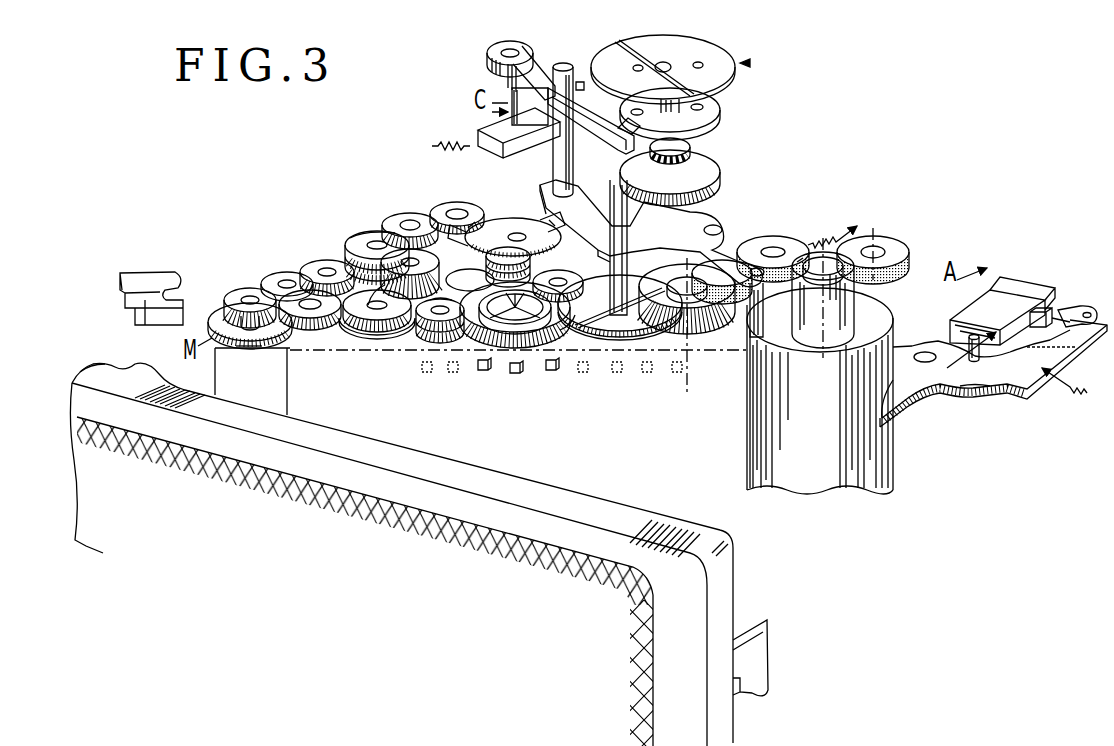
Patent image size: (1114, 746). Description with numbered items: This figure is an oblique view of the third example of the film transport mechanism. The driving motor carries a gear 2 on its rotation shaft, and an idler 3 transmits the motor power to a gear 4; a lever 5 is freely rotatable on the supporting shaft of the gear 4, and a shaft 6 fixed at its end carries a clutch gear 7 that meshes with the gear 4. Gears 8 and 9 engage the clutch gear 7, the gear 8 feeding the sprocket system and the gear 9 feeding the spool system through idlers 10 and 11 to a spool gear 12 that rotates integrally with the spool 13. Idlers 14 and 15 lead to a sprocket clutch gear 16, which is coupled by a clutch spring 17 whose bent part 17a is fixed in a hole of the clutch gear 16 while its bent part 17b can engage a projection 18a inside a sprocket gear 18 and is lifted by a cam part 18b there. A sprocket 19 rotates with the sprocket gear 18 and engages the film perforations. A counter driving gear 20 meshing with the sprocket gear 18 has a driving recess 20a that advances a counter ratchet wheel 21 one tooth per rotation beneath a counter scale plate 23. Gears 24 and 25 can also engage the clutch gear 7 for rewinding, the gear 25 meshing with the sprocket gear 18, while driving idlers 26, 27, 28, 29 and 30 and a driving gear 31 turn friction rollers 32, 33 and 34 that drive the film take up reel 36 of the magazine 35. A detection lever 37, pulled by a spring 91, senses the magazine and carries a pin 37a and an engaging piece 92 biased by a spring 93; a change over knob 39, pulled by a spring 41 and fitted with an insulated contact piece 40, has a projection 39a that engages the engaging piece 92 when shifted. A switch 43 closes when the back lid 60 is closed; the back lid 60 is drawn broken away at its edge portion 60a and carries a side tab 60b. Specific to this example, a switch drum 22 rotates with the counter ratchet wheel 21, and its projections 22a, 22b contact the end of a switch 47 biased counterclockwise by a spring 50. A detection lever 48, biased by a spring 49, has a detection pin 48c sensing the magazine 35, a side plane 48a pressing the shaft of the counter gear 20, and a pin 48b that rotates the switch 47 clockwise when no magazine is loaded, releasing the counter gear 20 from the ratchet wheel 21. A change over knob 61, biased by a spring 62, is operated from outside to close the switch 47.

The gear 2 is at (243, 293).
The idler 3 is at (310, 330).
The gear 4 is at (350, 335).
The lever 5 is at (375, 322).
The shaft 6 is at (395, 330).
The clutch gear 7 is at (425, 270).
The gear 8 is at (372, 232).
The gear 9 is at (362, 240).
The idler 10 is at (318, 262).
The idler 11 is at (268, 273).
The spool gear 12 is at (258, 342).
The spool 13 is at (287, 385).
The idler 14 is at (408, 213).
The idler 15 is at (455, 203).
The sprocket clutch gear 16 is at (500, 230).
The clutch spring 17 is at (516, 228).
The bent part 17a is at (540, 222).
The bent part 17b is at (480, 225).
The sprocket gear 18 is at (478, 345).
The projection 18a is at (508, 372).
The cam part 18b is at (548, 372).
The sprocket 19 is at (568, 350).
The counter driving gear 20 is at (605, 330).
The driving recess 20a is at (612, 146).
The counter ratchet wheel 21 is at (718, 170).
The switch drum 22 is at (712, 110).
The projection 22a is at (622, 124).
The projection 22b is at (700, 137).
The counter scale plate 23 is at (735, 50).
The gear 24 is at (430, 335).
The gear 25 is at (443, 335).
The driving idler 26 is at (468, 279).
The driving idler 27 is at (560, 278).
The driving idler 28 is at (568, 298).
The driving idler 29 is at (630, 258).
The driving idler 30 is at (695, 340).
The driving gear 31 is at (745, 310).
The friction roller 32 is at (770, 238).
The friction roller 33 is at (822, 340).
The friction roller 34 is at (880, 240).
The magazine 35 is at (808, 478).
The film take up reel 36 is at (798, 258).
The detection lever 37 is at (940, 408).
The pin 37a is at (974, 370).
The change over knob 39 is at (1013, 292).
The projection 39a is at (1035, 292).
The contact piece 40 is at (1014, 362).
The spring 41 is at (950, 360).
The switch 43 is at (145, 270).
The switch 47 is at (486, 70).
The detection lever 48 is at (685, 215).
The side plane 48a is at (580, 200).
The pin 48b is at (563, 62).
The detection pin 48c is at (752, 338).
The spring 49 is at (820, 240).
The spring 50 is at (582, 80).
The back lid 60 is at (225, 480).
The tape end 60a is at (125, 362).
The tab 60b is at (772, 640).
The change over knob 61 is at (490, 128).
The spring 62 is at (440, 140).
The spring 91 is at (1070, 393).
The engaging piece 92 is at (1086, 305).
The spring 93 is at (1046, 310).